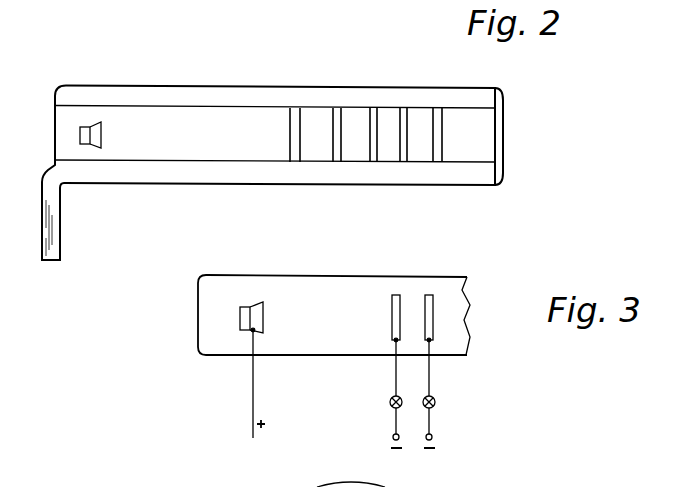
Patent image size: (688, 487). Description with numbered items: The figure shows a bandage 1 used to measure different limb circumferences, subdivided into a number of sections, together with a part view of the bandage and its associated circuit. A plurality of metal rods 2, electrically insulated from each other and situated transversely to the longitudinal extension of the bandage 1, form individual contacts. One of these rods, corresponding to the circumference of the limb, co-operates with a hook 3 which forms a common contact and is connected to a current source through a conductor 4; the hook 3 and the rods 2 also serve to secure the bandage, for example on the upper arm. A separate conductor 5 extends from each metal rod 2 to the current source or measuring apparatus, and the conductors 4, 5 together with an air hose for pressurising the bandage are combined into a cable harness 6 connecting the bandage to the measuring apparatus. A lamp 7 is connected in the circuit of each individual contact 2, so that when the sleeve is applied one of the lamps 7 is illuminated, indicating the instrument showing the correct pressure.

In FIG. 2, the bandage 1 is at (182, 128).
In FIG. 3, the bandage 1 is at (325, 285).
In FIG. 2, the metal rods 2 is at (432, 120).
In FIG. 3, the metal rods 2 is at (432, 295).
In FIG. 2, the hook 3 is at (97, 145).
In FIG. 3, the hook 3 is at (256, 318).
In FIG. 3, the conductor 4 is at (254, 391).
In FIG. 3, the conductor 5 is at (428, 385).
In FIG. 2, the cable harness 6 is at (50, 247).
In FIG. 3, the lamp 7 is at (425, 409).